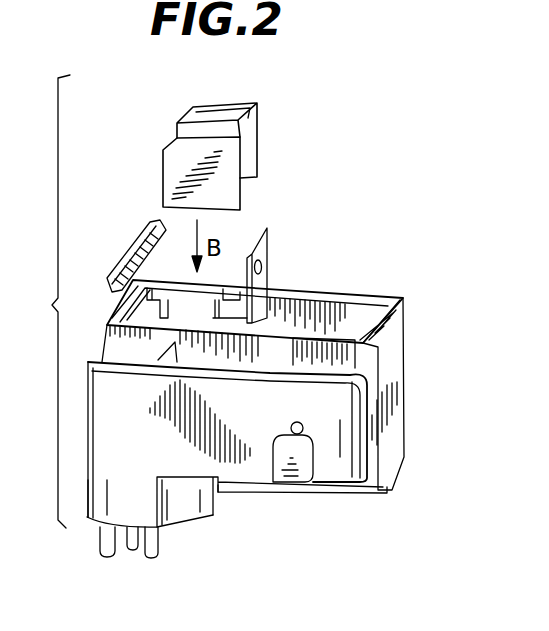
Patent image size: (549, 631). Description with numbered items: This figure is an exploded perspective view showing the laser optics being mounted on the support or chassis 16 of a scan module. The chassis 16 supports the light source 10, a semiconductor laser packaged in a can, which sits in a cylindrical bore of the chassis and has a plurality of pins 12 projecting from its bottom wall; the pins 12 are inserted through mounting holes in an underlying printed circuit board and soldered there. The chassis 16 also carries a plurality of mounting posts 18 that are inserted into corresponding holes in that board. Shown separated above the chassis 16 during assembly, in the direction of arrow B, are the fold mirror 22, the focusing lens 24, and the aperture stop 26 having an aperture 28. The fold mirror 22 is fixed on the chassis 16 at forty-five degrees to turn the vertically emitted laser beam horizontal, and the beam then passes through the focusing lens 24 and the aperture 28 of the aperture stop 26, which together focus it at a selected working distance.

The light source 10 is at (181, 520).
The pins 12 is at (151, 560).
The support or chassis 16 is at (416, 297).
The mounting posts 18 is at (104, 541).
The fold mirror 22 is at (137, 235).
The focusing lens 24 is at (213, 125).
The aperture stop 26 is at (265, 248).
The aperture 28 is at (266, 268).